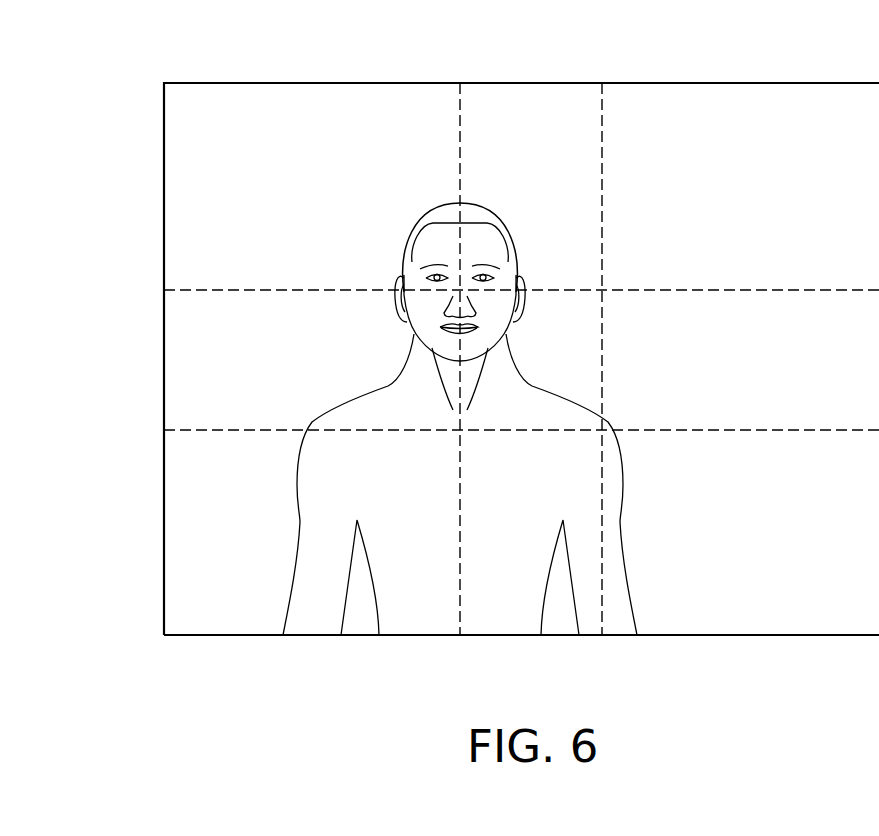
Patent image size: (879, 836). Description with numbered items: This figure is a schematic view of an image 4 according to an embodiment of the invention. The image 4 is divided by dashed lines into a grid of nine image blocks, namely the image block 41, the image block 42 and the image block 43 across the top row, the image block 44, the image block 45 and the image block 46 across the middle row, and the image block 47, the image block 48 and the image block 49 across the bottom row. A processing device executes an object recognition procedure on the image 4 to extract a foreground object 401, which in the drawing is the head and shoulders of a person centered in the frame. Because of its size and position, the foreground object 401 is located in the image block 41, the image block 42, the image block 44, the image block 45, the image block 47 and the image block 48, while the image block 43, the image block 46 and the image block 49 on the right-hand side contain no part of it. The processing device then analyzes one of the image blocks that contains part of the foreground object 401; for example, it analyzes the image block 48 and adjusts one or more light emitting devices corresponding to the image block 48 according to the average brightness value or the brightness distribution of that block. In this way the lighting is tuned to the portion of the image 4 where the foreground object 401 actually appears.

The image 4 is at (834, 83).
The foreground object 401 is at (296, 485).
The image block 41 is at (328, 198).
The image block 42 is at (546, 198).
The image block 43 is at (771, 198).
The image block 44 is at (328, 373).
The image block 45 is at (554, 373).
The image block 46 is at (771, 373).
The image block 47 is at (264, 553).
The image block 48 is at (533, 553).
The image block 49 is at (771, 553).